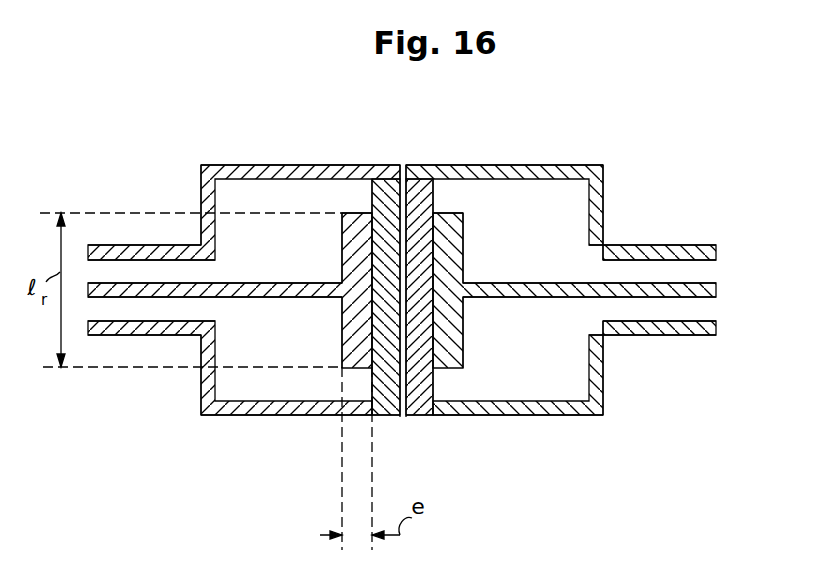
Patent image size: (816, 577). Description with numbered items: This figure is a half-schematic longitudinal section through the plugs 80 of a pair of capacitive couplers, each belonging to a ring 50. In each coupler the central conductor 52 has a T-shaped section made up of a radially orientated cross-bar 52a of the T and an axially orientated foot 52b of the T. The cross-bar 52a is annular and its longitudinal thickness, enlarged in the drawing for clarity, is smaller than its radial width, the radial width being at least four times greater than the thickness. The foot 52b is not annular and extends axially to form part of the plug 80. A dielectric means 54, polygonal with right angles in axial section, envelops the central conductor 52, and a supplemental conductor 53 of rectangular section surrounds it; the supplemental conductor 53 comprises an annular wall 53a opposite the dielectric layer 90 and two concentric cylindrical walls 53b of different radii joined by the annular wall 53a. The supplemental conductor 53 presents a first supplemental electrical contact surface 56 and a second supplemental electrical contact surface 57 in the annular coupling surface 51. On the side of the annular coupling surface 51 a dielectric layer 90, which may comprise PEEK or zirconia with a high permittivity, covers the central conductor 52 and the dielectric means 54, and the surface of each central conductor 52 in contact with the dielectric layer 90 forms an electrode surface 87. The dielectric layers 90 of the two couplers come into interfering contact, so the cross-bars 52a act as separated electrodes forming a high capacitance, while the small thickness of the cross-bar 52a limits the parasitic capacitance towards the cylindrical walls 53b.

The ring 50 is at (196, 118).
The annular coupling surface 51 is at (406, 289).
The central conductor 52 is at (402, 304).
The cross-bar of the T 52a is at (358, 357).
The foot of the T 52b is at (251, 287).
The supplemental conductor 53 is at (402, 294).
The annular wall 53a is at (203, 226).
The cylindrical walls 53b is at (271, 167).
The dielectric means 54 is at (227, 352).
The first supplemental electrical contact surface 56 is at (392, 412).
The second supplemental electrical contact surface 57 is at (400, 172).
The plug 80 is at (669, 229).
The electrode surface 87 is at (388, 368).
The dielectric layer 90 is at (367, 230).